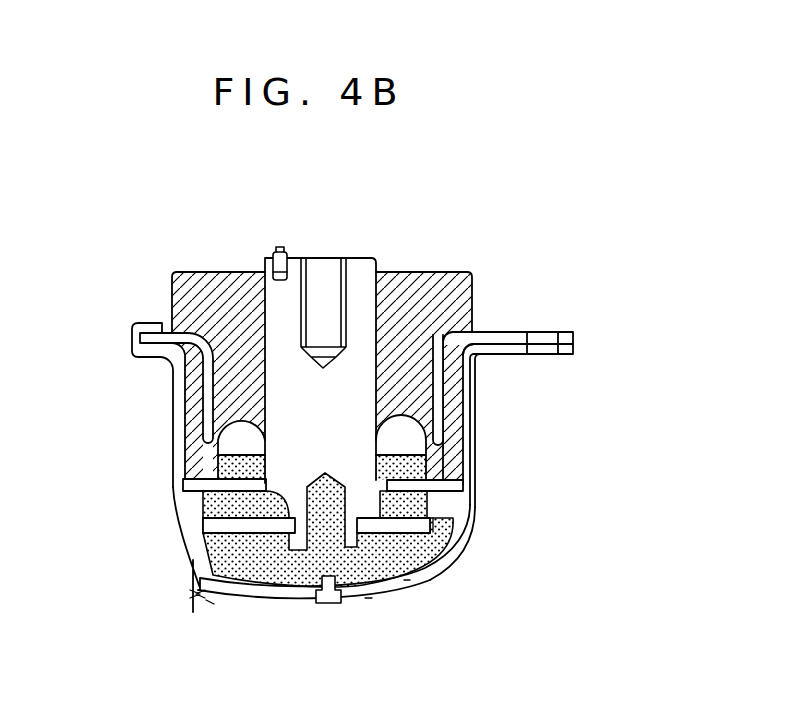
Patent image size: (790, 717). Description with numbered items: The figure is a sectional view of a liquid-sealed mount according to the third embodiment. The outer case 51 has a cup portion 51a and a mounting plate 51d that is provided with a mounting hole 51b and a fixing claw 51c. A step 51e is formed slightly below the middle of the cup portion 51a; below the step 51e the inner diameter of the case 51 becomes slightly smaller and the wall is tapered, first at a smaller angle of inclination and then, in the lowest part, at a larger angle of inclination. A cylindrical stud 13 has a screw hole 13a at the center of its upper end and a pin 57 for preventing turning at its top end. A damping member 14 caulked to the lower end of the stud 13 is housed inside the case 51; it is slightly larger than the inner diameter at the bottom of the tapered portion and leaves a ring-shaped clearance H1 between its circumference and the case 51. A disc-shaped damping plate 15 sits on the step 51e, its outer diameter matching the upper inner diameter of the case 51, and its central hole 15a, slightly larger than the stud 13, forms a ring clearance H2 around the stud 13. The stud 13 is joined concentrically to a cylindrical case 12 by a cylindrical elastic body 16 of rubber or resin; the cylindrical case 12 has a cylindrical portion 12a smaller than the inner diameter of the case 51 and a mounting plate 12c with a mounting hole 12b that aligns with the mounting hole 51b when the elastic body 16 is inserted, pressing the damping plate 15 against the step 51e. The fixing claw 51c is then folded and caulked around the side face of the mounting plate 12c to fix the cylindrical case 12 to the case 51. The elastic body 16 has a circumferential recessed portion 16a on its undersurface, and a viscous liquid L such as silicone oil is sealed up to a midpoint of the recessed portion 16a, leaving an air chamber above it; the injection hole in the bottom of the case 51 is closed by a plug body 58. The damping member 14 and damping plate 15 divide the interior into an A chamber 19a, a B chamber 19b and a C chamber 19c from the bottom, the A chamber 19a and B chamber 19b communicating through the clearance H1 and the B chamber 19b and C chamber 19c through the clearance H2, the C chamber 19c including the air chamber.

The cylindrical case 12 is at (432, 271).
The cylindrical portion 12a is at (446, 419).
The mounting hole 12b is at (540, 332).
The mounting plate 12c is at (516, 331).
The stud 13 is at (368, 272).
The screw hole 13a is at (334, 276).
The damping member 14 is at (446, 562).
The damping plate 15 is at (254, 592).
The hole 15a is at (300, 560).
The cylindrical elastic body 16 is at (468, 303).
The recessed portion 16a is at (208, 441).
The A chamber 19a is at (231, 597).
The B chamber 19b is at (204, 519).
The C chamber 19c is at (262, 481).
The case 51 is at (473, 552).
The cup portion 51a is at (466, 458).
The mounting hole 51b is at (528, 353).
The fixing claw 51c is at (148, 322).
The mounting plate 51d is at (514, 357).
The step 51e is at (467, 492).
The pin 57 is at (280, 250).
The plug body 58 is at (330, 604).
The ring-shaped clearance H1 is at (437, 522).
The ring clearance H2 is at (406, 583).
The viscous liquid L is at (368, 599).